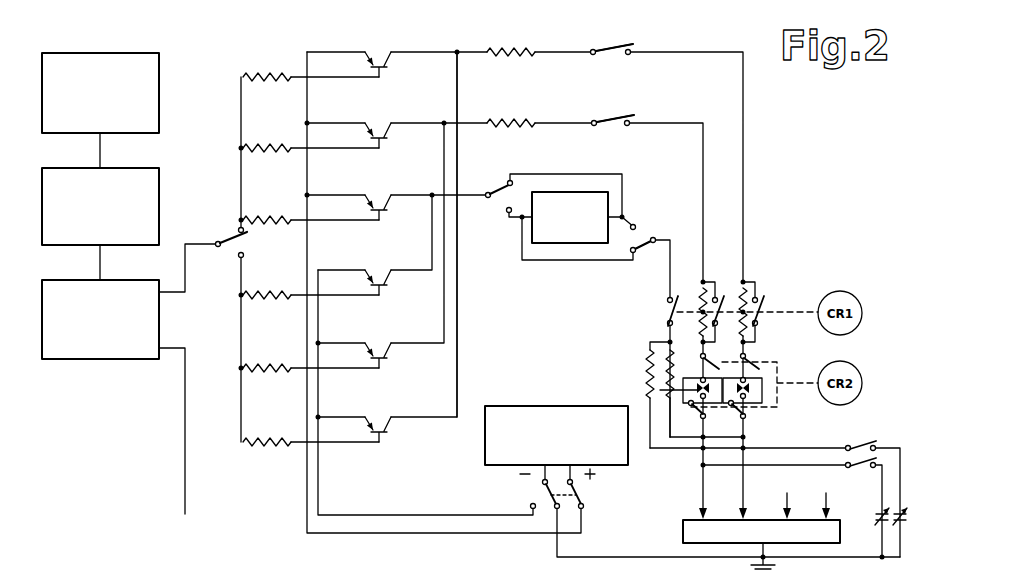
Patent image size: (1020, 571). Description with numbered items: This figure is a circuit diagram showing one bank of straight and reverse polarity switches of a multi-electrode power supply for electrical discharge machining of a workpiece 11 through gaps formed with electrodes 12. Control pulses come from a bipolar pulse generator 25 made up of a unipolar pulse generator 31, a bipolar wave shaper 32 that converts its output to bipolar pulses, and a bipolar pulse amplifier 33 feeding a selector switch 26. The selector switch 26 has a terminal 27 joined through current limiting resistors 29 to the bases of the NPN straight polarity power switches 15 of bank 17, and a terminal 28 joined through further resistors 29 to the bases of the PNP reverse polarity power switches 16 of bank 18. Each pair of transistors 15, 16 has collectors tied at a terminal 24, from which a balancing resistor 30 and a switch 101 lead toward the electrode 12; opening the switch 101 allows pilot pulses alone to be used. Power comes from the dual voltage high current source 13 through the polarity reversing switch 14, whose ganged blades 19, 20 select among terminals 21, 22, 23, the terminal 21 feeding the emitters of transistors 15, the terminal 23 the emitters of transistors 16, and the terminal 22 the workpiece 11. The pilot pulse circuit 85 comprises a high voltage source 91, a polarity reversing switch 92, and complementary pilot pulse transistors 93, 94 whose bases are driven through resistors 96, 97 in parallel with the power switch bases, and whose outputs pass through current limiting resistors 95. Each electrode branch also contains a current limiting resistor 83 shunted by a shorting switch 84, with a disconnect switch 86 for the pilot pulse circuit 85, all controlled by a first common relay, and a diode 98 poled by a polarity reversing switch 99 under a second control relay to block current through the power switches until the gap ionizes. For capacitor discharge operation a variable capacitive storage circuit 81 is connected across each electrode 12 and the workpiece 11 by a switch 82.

The workpiece 11 is at (820, 543).
The electrodes 12 is at (830, 505).
The high current source 13 is at (566, 406).
The polarity reversing switch 14 is at (550, 481).
The straight polarity power switch 15 is at (376, 352).
The reverse polarity power switch 16 is at (375, 60).
The straight polarity switch bank 17 is at (229, 350).
The reverse polarity switch bank 18 is at (221, 189).
The contact blade 19 is at (550, 491).
The contact blade 20 is at (586, 503).
The contact terminal 21 is at (530, 506).
The contact terminal 22 is at (575, 512).
The contact terminal 23 is at (584, 508).
The terminal 24 is at (457, 50).
The bipolar pulse generator 25 is at (164, 141).
The selector switch 26 is at (252, 243).
The selector switch terminal 27 is at (246, 258).
The selector switch terminal 28 is at (238, 228).
The current limiting resistor 29 is at (268, 72).
The balancing resistor 30 is at (503, 52).
The unipolar pulse generator 31 is at (159, 83).
The bipolar wave shaper 32 is at (159, 200).
The bipolar pulse amplifier 33 is at (82, 360).
The capacitive storage circuit 81 is at (895, 524).
The switch 82 is at (862, 462).
The current limiting resistor 83 is at (700, 291).
The shorting switch 84 is at (712, 323).
The pilot pulse circuit 85 is at (579, 232).
The pilot pulse circuit disconnect switch 86 is at (664, 312).
The high voltage source 91 is at (560, 192).
The polarity reversing switch 92 is at (622, 196).
The pilot pulse switch 93 is at (382, 287).
The pilot pulse switch 94 is at (382, 215).
The current limiting resistor 95 is at (645, 372).
The current limiting resistor 96 is at (257, 300).
The current limiting resistor 97 is at (270, 215).
The diode 98 is at (665, 390).
The polarity reversing switch 99 is at (693, 378).
The switch 101 is at (628, 48).